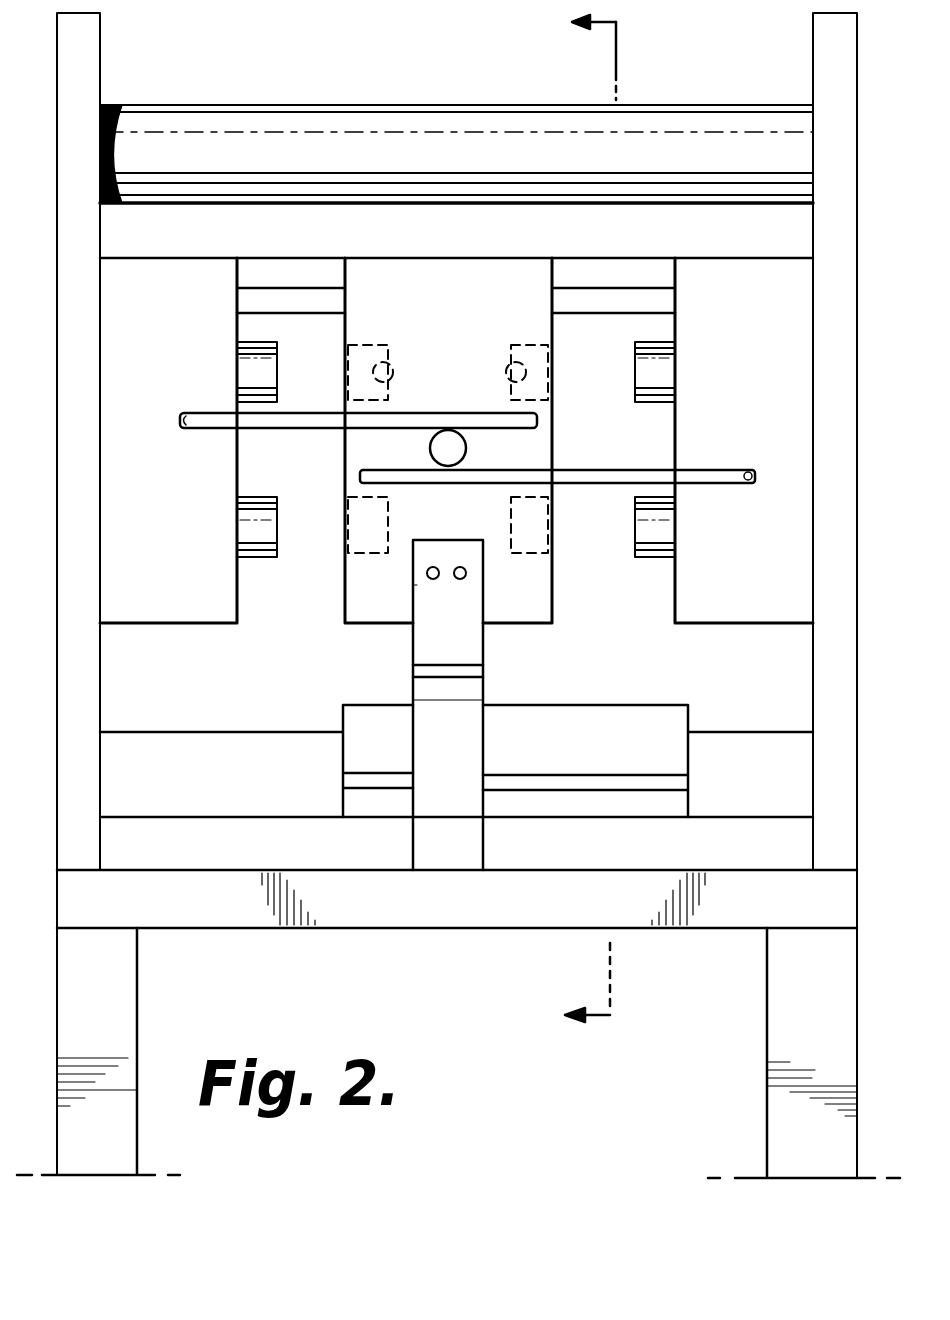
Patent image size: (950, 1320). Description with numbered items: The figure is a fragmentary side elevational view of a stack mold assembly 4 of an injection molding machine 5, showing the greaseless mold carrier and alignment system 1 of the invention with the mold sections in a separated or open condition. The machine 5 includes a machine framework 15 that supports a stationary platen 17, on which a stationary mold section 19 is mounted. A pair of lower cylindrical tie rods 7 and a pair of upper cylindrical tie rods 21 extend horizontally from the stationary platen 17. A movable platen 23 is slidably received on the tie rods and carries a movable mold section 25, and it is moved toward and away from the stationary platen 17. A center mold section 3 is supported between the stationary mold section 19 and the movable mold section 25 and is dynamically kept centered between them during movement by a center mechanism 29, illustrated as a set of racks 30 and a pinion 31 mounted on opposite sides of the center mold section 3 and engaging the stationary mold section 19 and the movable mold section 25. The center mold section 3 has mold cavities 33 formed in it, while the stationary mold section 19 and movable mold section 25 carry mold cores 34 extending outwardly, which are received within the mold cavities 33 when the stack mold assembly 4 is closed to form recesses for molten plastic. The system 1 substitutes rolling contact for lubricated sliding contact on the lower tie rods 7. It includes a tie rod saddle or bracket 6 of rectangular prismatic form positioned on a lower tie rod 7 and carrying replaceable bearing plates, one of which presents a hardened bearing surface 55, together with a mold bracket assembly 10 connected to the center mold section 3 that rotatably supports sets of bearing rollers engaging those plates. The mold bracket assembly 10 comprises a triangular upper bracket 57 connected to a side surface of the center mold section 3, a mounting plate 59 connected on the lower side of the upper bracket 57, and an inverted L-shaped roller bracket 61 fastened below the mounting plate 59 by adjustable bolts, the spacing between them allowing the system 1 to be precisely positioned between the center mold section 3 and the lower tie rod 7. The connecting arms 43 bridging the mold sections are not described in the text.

The greaseless mold carrier and alignment system 1 is at (338, 653).
The center mold section 3 is at (538, 270).
The stack mold assembly 4 is at (300, 250).
The injection molding machine 5 is at (180, 72).
The tie rod saddle or bracket 6 is at (348, 720).
The lower cylindrical tie rod 7 is at (145, 795).
The mold bracket assembly 10 is at (533, 585).
The machine framework 15 is at (772, 980).
The stationary platen 17 is at (820, 712).
The stationary mold section 19 is at (693, 608).
The upper cylindrical tie rod 21 is at (275, 118).
The movable platen 23 is at (90, 233).
The movable mold section 25 is at (130, 595).
The center mechanism 29 is at (462, 481).
The rack 30 is at (370, 478).
The pinion 31 is at (468, 446).
The mold cavity 33 is at (508, 370).
The mold core 34 is at (268, 368).
The connecting arm 43 is at (280, 268).
The bearing surface 55 is at (512, 782).
The triangular upper bracket 57 is at (420, 608).
The mounting plate 59 is at (487, 672).
The inverted L-shaped roller bracket 61 is at (414, 703).